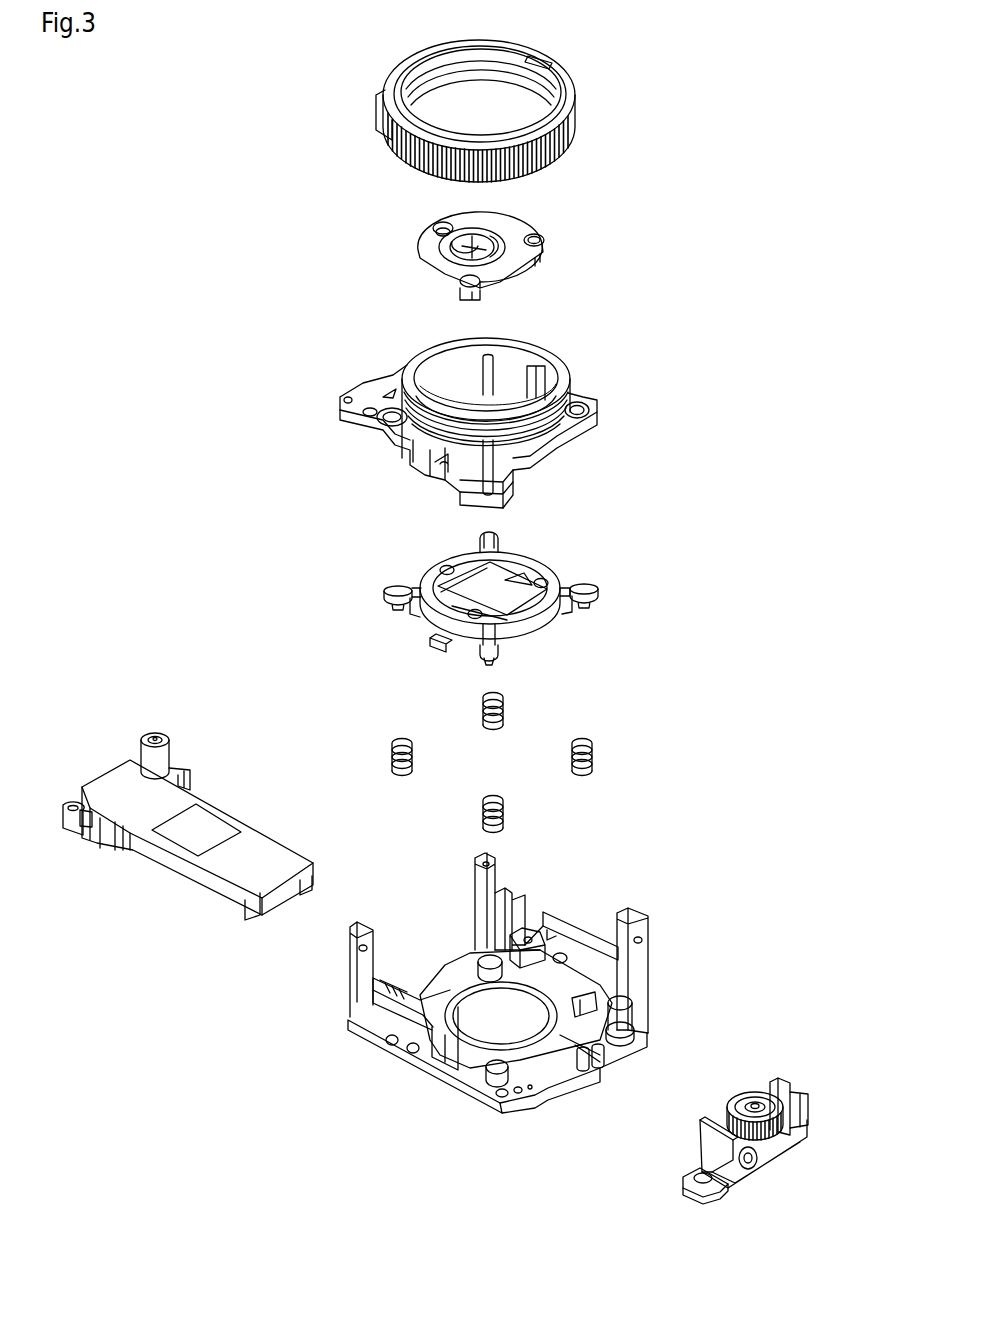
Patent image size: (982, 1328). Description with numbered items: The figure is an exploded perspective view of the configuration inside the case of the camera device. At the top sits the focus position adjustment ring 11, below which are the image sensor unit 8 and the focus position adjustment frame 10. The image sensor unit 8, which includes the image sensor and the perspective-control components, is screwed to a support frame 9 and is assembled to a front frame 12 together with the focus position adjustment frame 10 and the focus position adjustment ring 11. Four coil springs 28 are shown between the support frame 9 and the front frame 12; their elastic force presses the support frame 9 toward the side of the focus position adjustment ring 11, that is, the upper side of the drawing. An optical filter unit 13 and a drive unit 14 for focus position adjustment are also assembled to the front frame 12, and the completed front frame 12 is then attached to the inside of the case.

The image sensor unit 8 is at (548, 253).
The support frame 9 is at (560, 576).
The focus position adjustment frame 10 is at (572, 377).
The focus position adjustment ring 11 is at (575, 108).
The front frame 12 is at (648, 932).
The optical filter unit 13 is at (266, 838).
The drive unit 14 is at (805, 1092).
The coil springs 28 is at (504, 710).